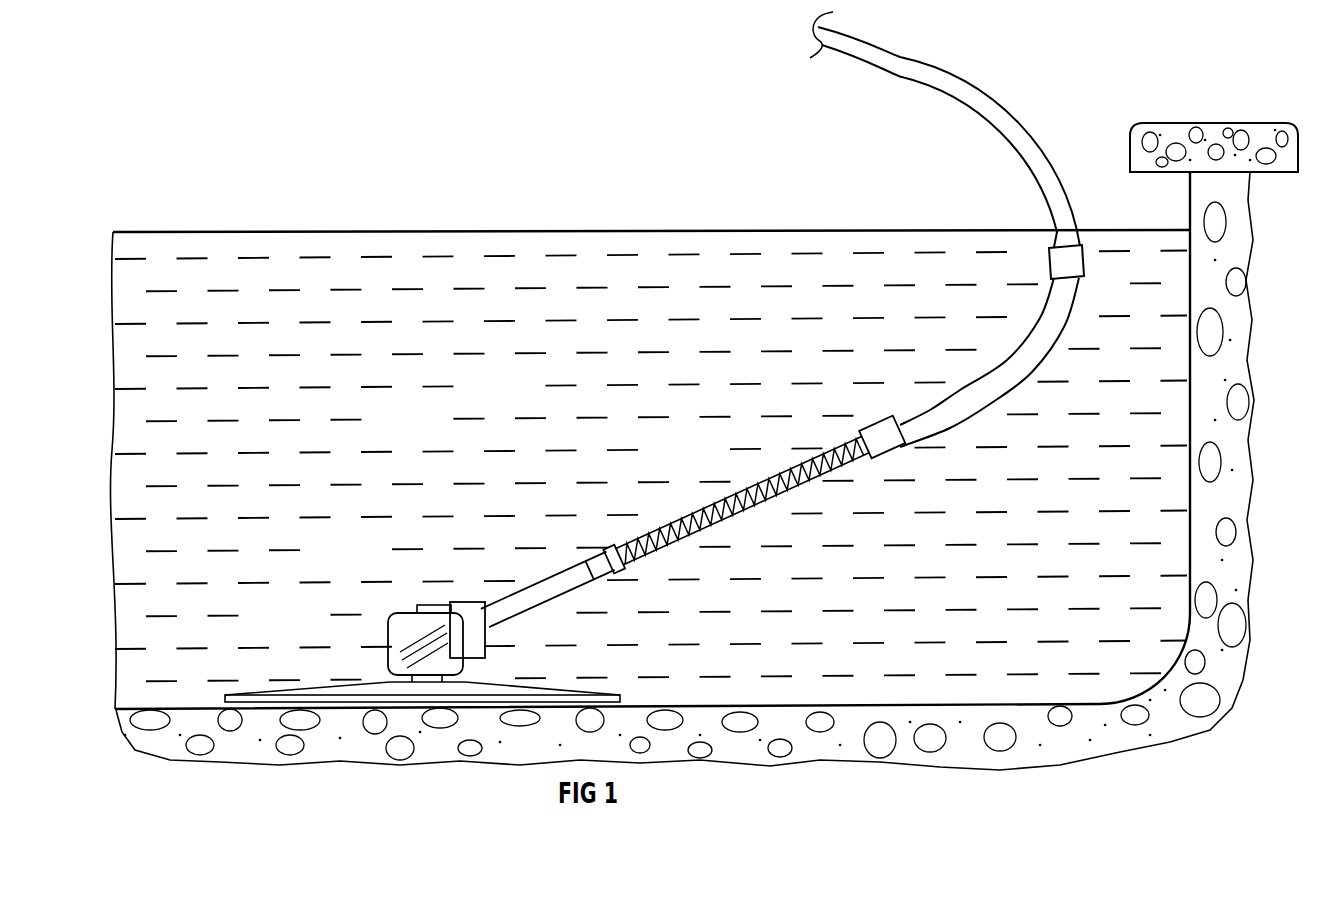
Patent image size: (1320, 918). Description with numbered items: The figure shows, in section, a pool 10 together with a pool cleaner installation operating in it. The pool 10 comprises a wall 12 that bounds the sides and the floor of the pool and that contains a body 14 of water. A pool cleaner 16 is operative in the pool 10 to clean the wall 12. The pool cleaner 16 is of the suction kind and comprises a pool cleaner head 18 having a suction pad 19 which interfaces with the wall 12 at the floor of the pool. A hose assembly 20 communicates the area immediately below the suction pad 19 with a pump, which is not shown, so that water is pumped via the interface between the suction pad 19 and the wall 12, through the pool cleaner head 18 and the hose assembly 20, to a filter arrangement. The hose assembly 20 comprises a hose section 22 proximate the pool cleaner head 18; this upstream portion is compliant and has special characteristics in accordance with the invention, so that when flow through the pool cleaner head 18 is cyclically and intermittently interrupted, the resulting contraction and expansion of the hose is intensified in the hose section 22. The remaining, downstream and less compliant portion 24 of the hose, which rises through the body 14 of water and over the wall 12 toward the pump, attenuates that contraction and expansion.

The pool 10 is at (530, 147).
The wall 12 is at (1193, 377).
The body of water 14 is at (526, 394).
The pool cleaner 16 is at (448, 478).
The pool cleaner head 18 is at (410, 602).
The suction pad 19 is at (337, 692).
The hose assembly 20 is at (773, 452).
The hose section 22 is at (723, 505).
The downstream hose portion 24 is at (1017, 139).